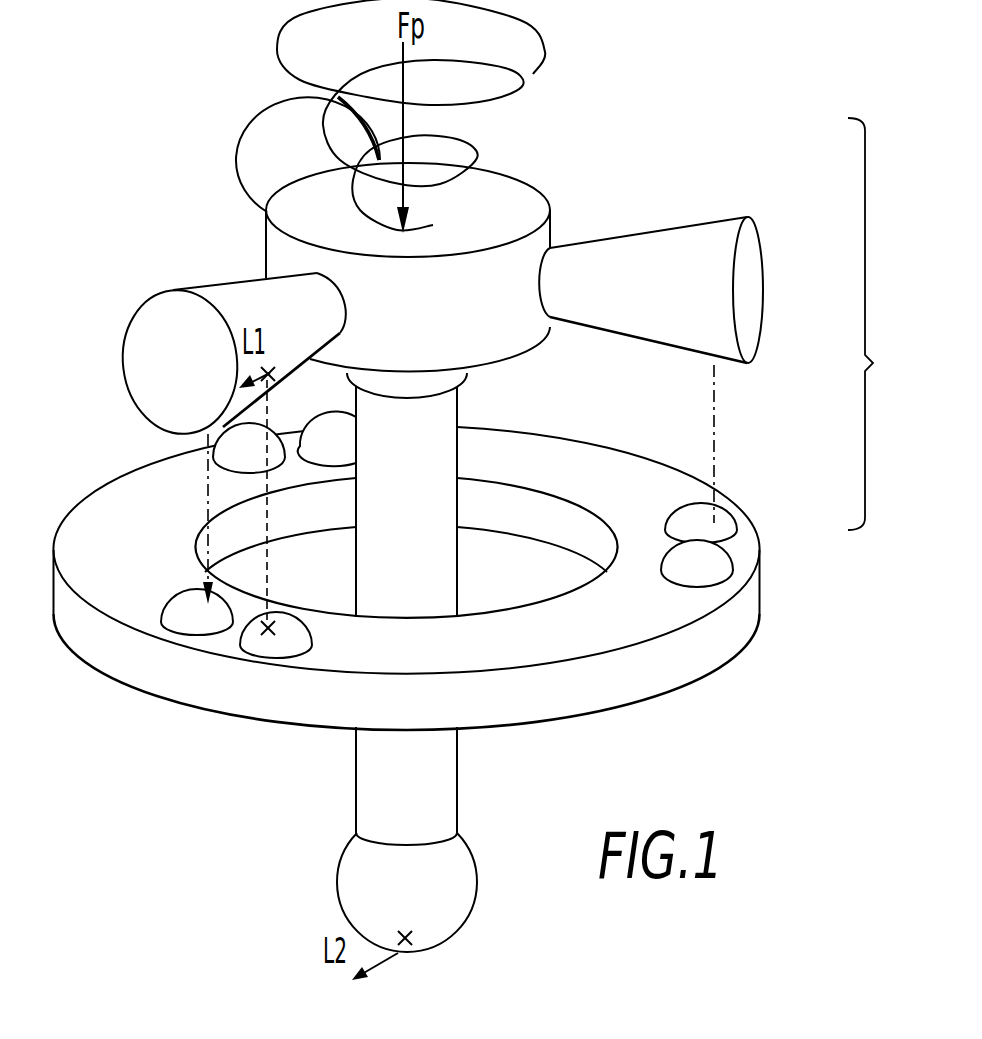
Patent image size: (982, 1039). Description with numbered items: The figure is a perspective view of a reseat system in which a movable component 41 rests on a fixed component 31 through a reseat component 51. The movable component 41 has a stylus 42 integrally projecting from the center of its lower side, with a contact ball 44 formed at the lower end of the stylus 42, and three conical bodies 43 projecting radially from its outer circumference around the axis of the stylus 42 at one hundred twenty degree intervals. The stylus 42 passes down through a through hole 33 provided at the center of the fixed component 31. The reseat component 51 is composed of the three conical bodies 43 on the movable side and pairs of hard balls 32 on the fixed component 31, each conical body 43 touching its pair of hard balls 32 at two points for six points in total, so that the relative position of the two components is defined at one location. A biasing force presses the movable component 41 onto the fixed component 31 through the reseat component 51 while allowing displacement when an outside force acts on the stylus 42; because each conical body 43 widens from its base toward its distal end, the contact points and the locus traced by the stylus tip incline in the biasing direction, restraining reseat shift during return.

The fixed component 31 is at (653, 615).
The hard balls 32 is at (258, 438).
The through hole 33 is at (511, 590).
The movable component 41 is at (508, 188).
The stylus 42 is at (372, 758).
The conical bodies 43 is at (270, 128).
The contact ball 44 is at (438, 920).
The reseat component 51 is at (879, 324).